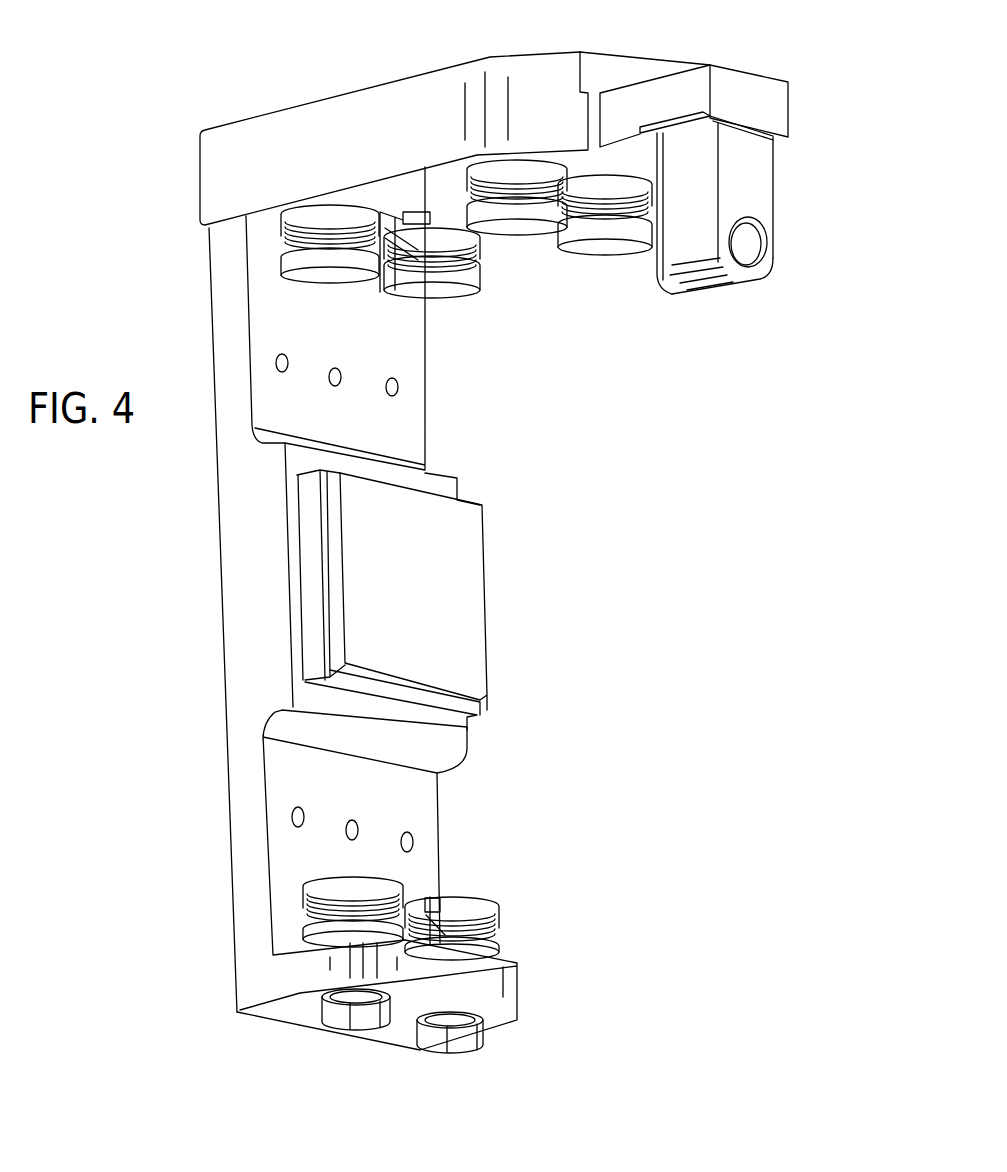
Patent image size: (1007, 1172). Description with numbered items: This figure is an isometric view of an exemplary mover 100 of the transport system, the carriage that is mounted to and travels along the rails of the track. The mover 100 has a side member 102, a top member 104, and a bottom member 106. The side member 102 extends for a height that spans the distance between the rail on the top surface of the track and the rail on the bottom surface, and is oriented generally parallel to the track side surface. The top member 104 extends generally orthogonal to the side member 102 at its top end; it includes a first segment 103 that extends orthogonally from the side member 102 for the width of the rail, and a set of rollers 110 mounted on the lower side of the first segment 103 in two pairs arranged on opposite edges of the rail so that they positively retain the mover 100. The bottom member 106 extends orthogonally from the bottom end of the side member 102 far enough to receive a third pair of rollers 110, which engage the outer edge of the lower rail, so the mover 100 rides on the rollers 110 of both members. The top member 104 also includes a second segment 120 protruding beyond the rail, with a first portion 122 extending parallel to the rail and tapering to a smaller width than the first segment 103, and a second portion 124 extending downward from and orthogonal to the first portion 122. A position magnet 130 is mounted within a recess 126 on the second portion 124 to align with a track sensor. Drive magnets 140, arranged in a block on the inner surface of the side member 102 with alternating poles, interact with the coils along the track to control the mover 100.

The mover 100 is at (175, 56).
The side member 102 is at (221, 558).
The first segment 103 is at (311, 138).
The top member 104 is at (372, 84).
The bottom member 106 is at (487, 977).
The rollers 110 is at (325, 268).
The second segment 120 is at (750, 72).
The first portion 122 is at (657, 100).
The second portion 124 is at (752, 178).
The recess 126 is at (763, 253).
The position magnet 130 is at (752, 243).
The drive magnets 140 is at (458, 598).